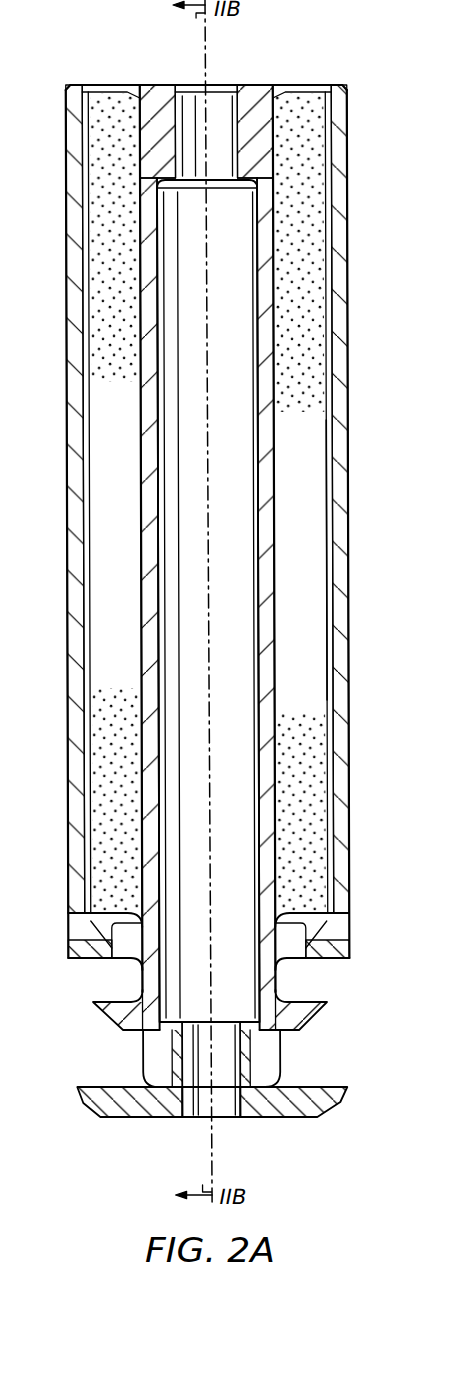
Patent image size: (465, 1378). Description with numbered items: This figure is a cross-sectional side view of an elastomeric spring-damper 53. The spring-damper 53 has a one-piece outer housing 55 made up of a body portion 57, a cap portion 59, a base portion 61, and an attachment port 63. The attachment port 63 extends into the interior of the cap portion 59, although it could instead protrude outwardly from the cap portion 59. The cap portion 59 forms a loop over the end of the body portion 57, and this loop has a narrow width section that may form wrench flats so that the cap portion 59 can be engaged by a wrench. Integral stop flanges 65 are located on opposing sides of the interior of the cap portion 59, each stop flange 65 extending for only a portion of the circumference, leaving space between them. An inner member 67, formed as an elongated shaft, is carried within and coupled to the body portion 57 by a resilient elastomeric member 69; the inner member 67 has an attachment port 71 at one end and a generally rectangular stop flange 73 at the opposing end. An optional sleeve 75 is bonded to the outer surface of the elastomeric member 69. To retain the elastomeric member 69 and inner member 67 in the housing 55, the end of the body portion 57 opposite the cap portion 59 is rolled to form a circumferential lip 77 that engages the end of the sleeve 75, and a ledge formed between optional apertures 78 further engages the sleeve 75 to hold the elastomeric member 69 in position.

The spring-damper 53 is at (278, 55).
The outer housing 55 is at (352, 377).
The body portion 57 is at (349, 653).
The cap portion 59 is at (133, 1047).
The base portion 61 is at (277, 1120).
The attachment port 63 is at (185, 1093).
The stop flange 65 is at (67, 958).
The inner member 67 is at (282, 494).
The elastomeric member 69 is at (303, 157).
The attachment port 71 is at (188, 107).
The stop flange 73 is at (315, 1030).
The sleeve 75 is at (325, 630).
The circumferential lip 77 is at (84, 95).
The aperture 78 is at (350, 923).